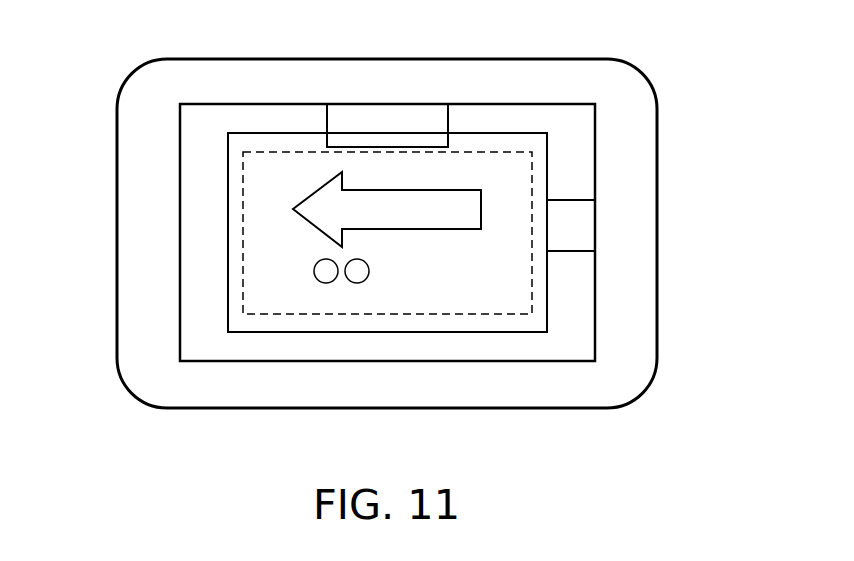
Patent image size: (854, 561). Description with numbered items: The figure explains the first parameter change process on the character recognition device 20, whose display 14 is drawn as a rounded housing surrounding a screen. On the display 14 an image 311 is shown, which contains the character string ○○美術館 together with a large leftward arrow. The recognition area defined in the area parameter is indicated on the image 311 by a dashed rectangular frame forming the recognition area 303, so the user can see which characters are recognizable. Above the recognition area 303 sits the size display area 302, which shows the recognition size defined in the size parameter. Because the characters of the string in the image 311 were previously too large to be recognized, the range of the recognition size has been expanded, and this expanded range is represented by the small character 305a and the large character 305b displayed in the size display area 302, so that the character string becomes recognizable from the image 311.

The character recognition device 20 is at (585, 59).
The display 14 is at (180, 300).
The image 311 is at (307, 349).
The recognition area 303 is at (425, 314).
The size display area 302 is at (388, 104).
The character 305a is at (350, 118).
The character 305b is at (418, 108).